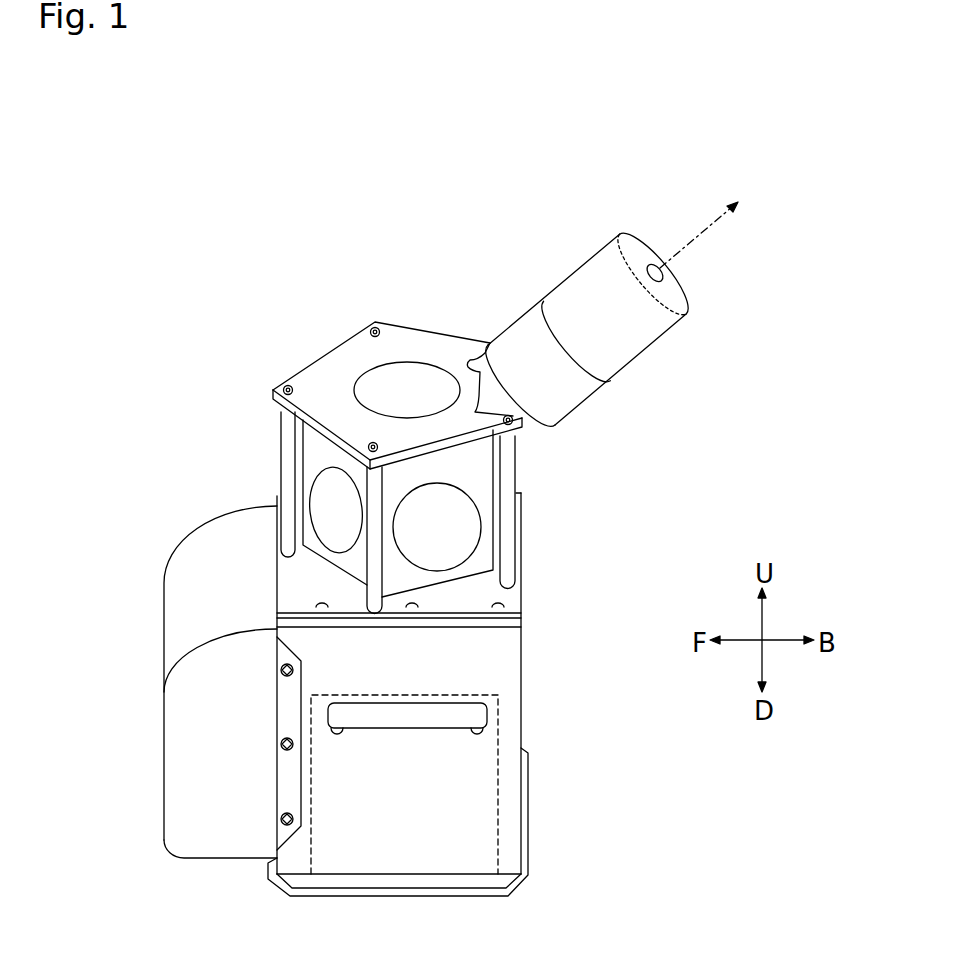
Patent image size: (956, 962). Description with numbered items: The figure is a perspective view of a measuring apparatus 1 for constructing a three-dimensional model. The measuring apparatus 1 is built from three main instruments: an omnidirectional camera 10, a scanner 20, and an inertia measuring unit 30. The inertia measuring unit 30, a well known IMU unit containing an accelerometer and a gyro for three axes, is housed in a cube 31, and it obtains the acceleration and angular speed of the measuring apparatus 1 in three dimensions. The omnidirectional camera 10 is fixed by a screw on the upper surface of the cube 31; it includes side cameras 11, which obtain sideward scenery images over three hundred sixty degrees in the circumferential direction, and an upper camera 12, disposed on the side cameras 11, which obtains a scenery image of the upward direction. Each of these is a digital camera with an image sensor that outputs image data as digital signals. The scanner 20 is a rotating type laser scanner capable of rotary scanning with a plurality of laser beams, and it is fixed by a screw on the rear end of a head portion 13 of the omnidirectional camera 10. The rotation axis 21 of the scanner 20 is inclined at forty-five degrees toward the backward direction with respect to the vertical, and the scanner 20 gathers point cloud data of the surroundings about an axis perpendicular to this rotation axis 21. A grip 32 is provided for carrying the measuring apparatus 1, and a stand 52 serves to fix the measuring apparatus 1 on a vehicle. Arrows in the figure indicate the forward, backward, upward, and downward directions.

The measuring apparatus 1 is at (172, 274).
The omnidirectional camera 10 is at (521, 480).
The side camera 11 is at (331, 516).
The upper camera 12 is at (405, 375).
The head portion 13 is at (452, 353).
The scanner 20 is at (574, 268).
The rotation axis 21 is at (708, 234).
The inertia measuring unit 30 is at (499, 834).
The cube 31 is at (522, 667).
The grip 32 is at (477, 715).
The stand 52 is at (432, 882).